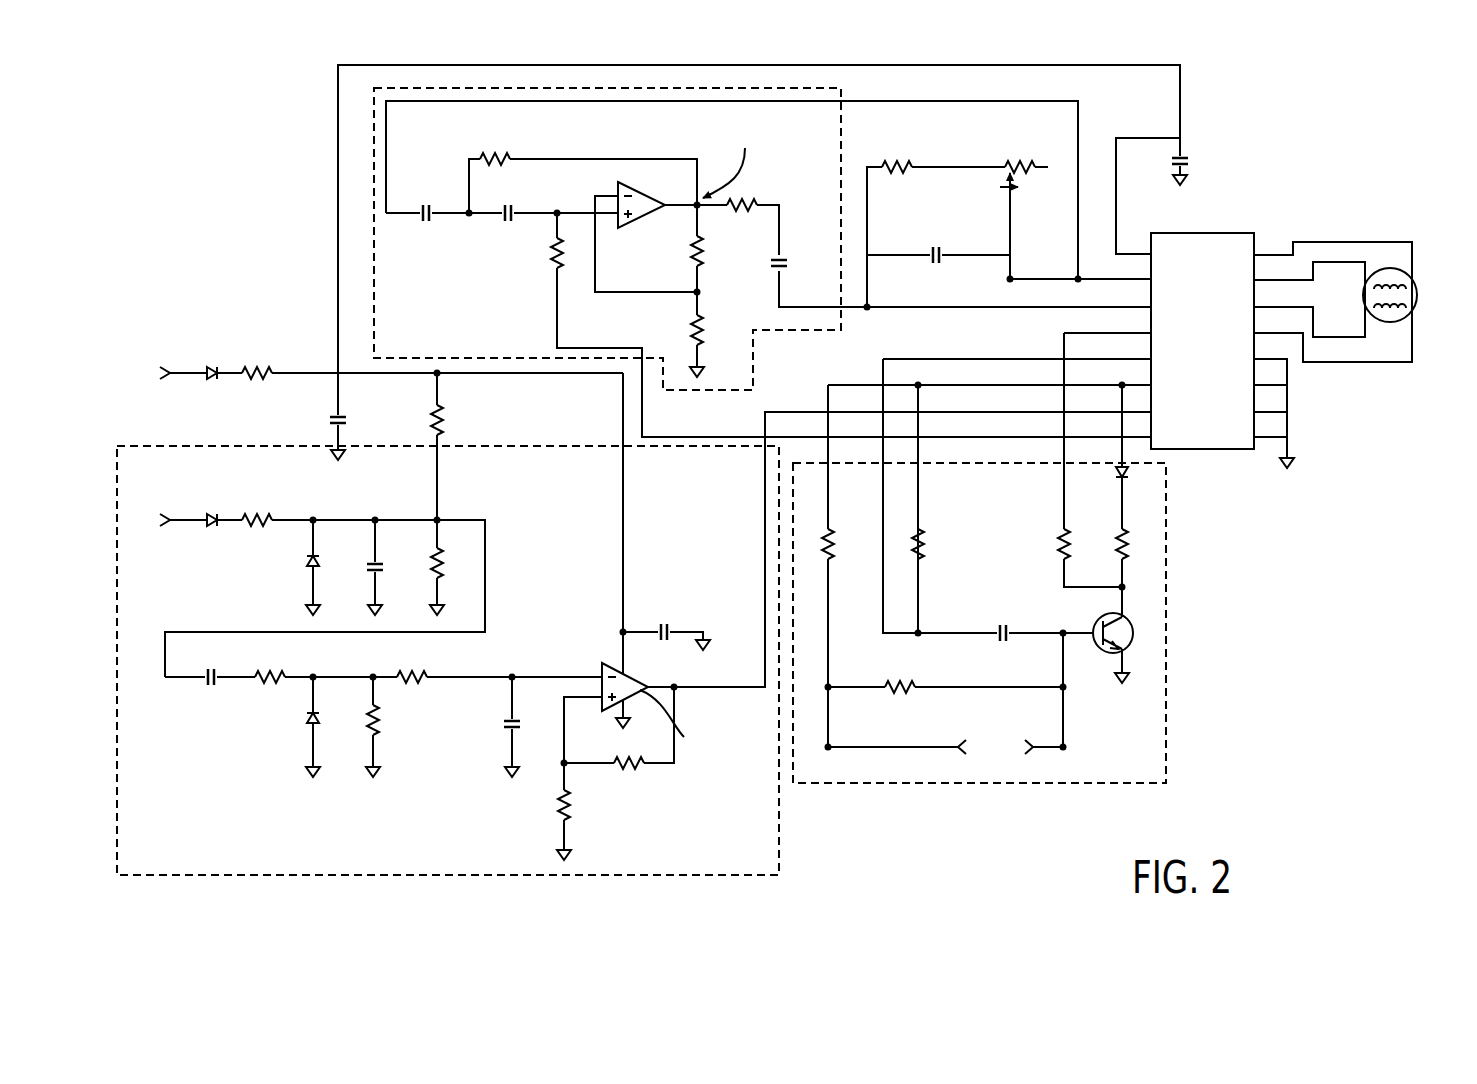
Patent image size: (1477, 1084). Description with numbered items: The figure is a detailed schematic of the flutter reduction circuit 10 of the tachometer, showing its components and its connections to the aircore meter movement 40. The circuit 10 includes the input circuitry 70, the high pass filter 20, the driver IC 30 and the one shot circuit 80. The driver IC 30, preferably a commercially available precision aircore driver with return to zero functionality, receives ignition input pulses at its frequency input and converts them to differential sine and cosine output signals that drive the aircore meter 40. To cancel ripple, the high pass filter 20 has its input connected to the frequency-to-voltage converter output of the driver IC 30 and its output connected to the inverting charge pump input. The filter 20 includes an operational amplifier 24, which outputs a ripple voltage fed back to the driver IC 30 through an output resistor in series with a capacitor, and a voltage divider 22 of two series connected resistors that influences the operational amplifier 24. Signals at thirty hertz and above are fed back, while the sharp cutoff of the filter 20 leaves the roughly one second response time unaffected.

The flutter reduction circuit 10 is at (231, 255).
The high pass filter 20 is at (391, 271).
The voltage divider 22 is at (718, 300).
The operational amplifier 24 is at (638, 191).
The tachometer driver integrated circuit 30 is at (1238, 451).
The aircore meter movement 40 is at (1398, 277).
The input circuitry 70 is at (425, 858).
The one shot circuit 80 is at (921, 768).